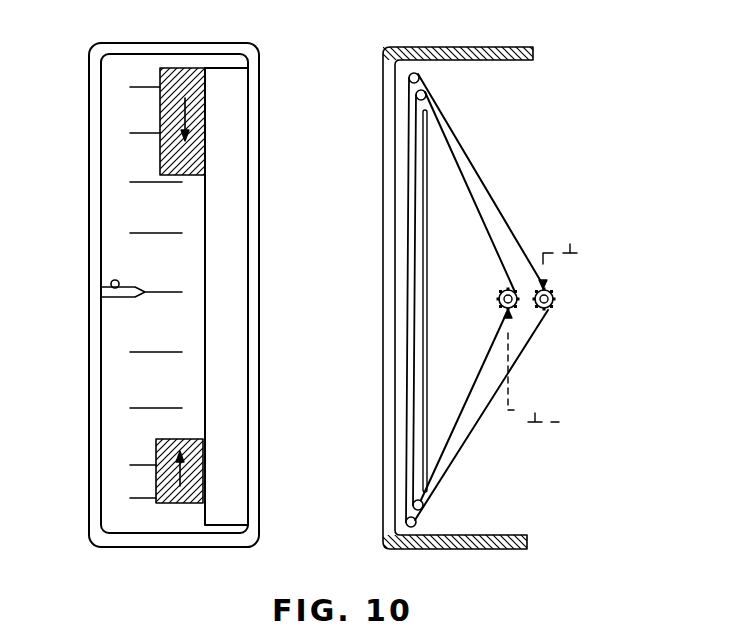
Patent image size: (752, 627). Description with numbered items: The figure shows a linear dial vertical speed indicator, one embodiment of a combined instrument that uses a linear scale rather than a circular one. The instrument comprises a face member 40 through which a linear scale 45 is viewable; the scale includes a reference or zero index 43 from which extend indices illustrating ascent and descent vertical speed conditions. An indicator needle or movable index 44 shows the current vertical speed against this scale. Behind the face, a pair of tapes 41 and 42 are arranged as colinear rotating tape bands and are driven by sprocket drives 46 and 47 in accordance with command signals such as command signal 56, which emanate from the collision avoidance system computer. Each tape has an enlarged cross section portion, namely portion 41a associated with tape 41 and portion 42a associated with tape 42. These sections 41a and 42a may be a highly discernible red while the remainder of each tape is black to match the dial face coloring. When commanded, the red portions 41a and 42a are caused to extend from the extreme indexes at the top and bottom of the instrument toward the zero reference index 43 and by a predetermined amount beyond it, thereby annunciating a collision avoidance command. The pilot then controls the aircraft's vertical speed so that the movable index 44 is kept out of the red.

The face member 40 is at (96, 60).
The tape 41 is at (228, 193).
The enlarged cross section portion 41a is at (175, 69).
The tape 42 is at (464, 170).
The enlarged cross section portion 42a is at (166, 504).
The reference or zero index 43 is at (111, 283).
The indicator needle or movable index 44 is at (130, 293).
The linear scale 45 is at (116, 210).
The sprocket drive 46 is at (557, 300).
The sprocket drive 47 is at (497, 305).
The command signal 56 is at (572, 249).